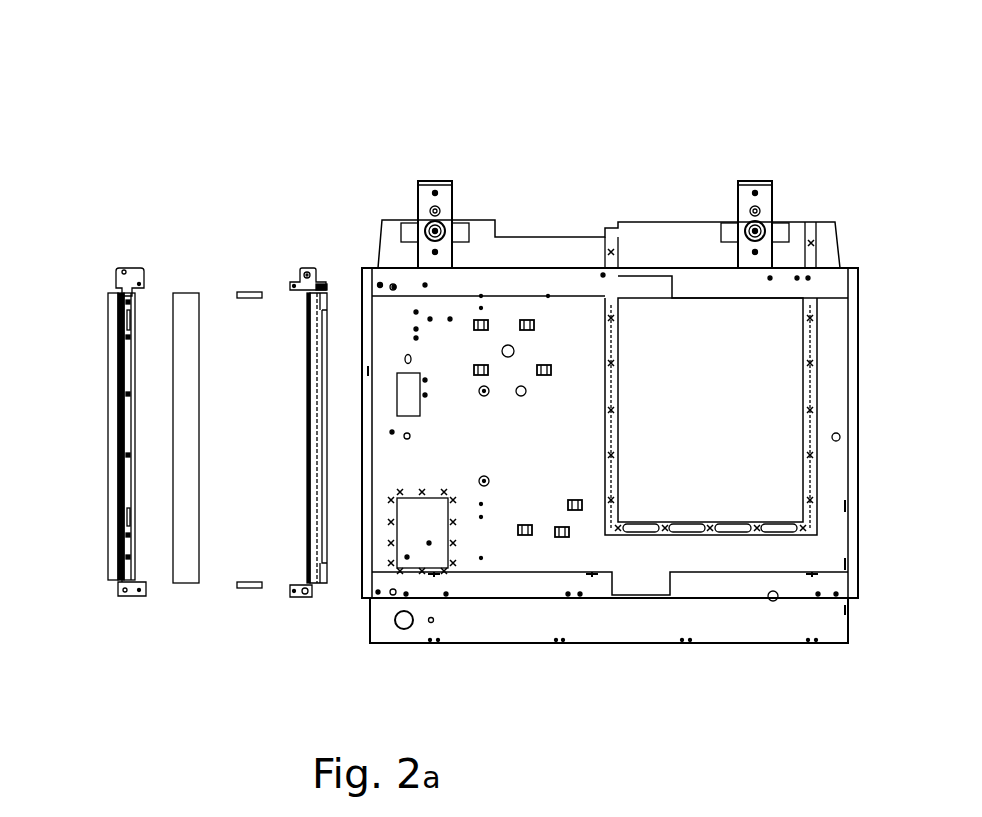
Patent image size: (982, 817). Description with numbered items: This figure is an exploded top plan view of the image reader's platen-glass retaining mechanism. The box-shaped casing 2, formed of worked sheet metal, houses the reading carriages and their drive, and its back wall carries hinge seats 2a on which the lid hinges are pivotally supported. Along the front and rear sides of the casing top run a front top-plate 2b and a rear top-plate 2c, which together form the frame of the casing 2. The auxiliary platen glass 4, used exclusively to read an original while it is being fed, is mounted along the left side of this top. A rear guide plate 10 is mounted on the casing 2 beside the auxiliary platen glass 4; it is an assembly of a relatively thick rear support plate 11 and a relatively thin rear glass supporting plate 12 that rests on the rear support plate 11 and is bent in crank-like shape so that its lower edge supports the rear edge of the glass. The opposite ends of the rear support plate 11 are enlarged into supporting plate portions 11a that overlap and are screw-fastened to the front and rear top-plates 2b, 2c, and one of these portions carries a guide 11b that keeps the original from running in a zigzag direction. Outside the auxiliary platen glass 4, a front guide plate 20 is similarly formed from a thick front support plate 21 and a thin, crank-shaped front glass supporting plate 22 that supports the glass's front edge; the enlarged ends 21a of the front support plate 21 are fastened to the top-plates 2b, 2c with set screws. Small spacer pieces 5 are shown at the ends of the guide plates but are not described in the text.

The casing 2 is at (806, 186).
The hinge seats 2a is at (440, 190).
The front top-plate 2b is at (603, 590).
The rear top-plate 2c is at (680, 287).
The auxiliary platen glass 4 is at (186, 583).
The spacer 5 is at (250, 292).
The rear guide plate 10 is at (320, 583).
The rear support plate 11 is at (328, 437).
The supporting plate portions 11a is at (306, 268).
The guide 11b is at (328, 285).
The rear glass supporting plate 12 is at (315, 483).
The front guide plate 20 is at (114, 540).
The front support plate 21 is at (115, 438).
The supporting plate portions 21a is at (133, 268).
The front glass supporting plate 22 is at (136, 393).